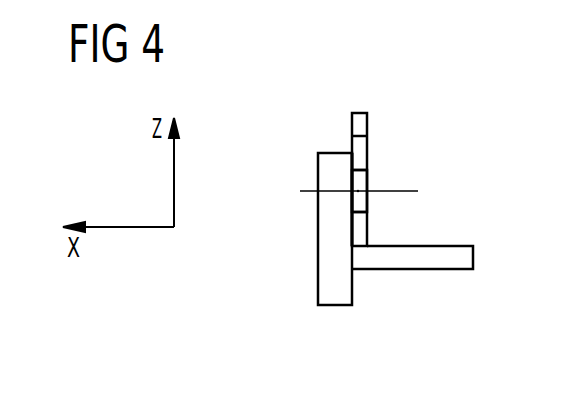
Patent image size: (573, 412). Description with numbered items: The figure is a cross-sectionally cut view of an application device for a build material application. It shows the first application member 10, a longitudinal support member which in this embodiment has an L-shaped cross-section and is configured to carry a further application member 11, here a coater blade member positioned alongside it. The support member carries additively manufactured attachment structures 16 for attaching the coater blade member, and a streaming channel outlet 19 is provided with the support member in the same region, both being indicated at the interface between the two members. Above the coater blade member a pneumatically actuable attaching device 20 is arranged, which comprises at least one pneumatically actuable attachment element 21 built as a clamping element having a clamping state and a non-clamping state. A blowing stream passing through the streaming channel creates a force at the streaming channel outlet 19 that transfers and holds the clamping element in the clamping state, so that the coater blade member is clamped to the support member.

The first application member 10 is at (413, 270).
The further application member 11 is at (335, 305).
The attachment structures 16 is at (350, 182).
The streaming channel outlet 19 is at (350, 182).
The pneumatically actuable attaching device 20 is at (383, 136).
The pneumatically actuable attachment element 21 is at (362, 181).